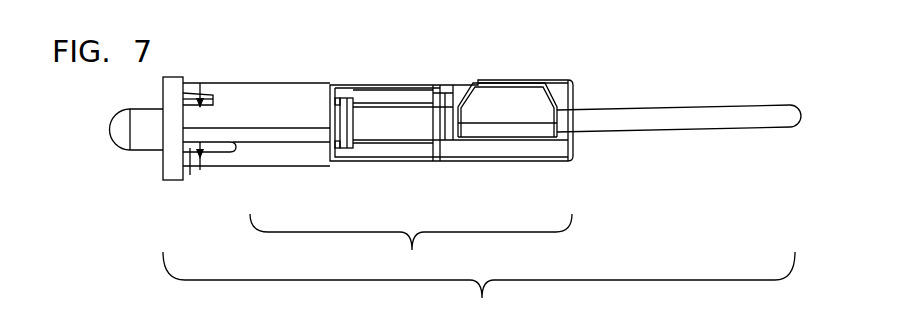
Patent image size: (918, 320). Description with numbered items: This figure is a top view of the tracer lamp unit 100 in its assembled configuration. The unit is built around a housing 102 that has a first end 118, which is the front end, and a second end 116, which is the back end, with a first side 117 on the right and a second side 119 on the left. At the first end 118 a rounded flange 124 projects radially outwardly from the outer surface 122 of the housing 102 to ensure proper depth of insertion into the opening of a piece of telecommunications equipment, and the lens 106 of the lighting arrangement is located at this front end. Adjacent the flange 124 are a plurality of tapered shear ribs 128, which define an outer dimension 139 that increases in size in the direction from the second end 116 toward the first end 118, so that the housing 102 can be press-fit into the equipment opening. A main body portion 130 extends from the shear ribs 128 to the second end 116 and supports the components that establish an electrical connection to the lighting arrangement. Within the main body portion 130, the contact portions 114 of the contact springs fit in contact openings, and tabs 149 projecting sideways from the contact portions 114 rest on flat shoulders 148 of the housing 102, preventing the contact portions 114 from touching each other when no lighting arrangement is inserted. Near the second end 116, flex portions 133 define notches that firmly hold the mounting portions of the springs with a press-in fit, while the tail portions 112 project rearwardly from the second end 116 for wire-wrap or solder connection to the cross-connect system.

The tracer lamp unit 100 is at (479, 286).
The housing 102 is at (313, 170).
The lens 106 is at (117, 129).
The tail portions 112 is at (778, 115).
The contact portions 114 is at (357, 120).
The second end 116 is at (613, 156).
The first side 117 is at (462, 76).
The first end 118 is at (125, 171).
The second side 119 is at (543, 167).
The outer surface 122 is at (303, 83).
The flange 124 is at (173, 176).
The shear ribs 128 is at (192, 150).
The main body portion 130 is at (411, 245).
The flex portions 133 is at (513, 102).
The outer dimension 139 is at (200, 136).
The flat shoulders 148 is at (405, 93).
The tabs 149 is at (347, 98).